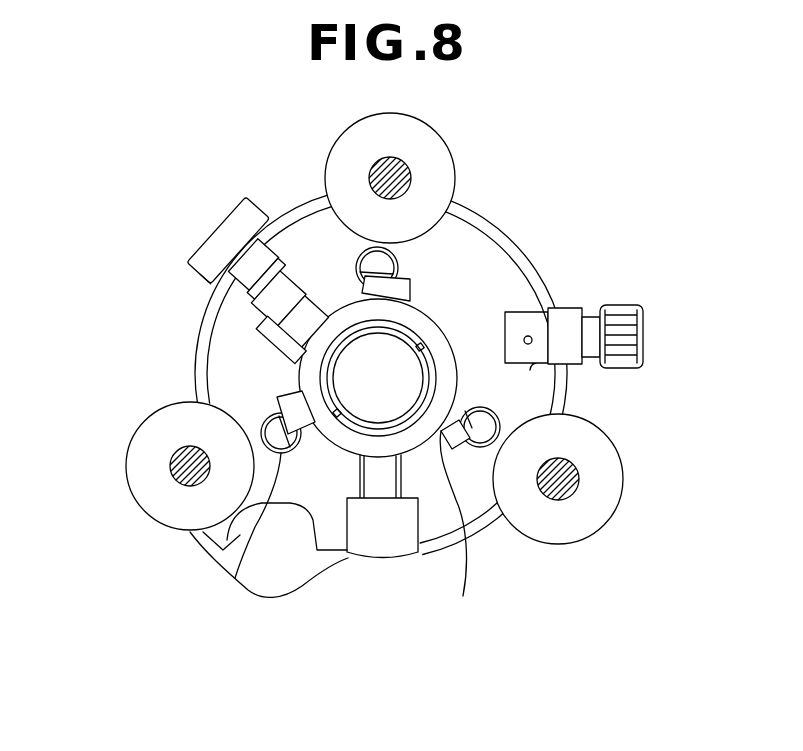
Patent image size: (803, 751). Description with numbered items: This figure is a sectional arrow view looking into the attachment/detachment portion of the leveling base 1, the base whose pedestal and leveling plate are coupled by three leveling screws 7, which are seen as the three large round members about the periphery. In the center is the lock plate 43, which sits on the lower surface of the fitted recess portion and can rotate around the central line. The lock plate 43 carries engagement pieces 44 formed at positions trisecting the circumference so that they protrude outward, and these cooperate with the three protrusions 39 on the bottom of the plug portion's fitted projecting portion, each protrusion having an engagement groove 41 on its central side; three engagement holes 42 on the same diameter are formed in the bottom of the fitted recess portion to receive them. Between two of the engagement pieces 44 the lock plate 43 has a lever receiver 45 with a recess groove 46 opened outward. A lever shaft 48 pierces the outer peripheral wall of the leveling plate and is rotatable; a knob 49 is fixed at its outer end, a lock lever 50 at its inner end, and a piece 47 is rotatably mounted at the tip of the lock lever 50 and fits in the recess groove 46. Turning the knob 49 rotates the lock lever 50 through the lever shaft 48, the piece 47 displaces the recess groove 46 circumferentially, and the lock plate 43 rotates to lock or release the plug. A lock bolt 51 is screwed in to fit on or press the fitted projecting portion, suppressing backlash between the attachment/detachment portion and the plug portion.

The leveling base 1 is at (529, 270).
The leveling screw 7 is at (623, 497).
The protrusion 39 is at (235, 578).
The engagement groove 41 is at (458, 529).
The engagement hole 42 is at (258, 450).
The lock plate 43 is at (440, 302).
The engagement piece 44 is at (410, 287).
The lever receiver 45 is at (302, 322).
The recess groove 46 is at (281, 339).
The piece 47 is at (278, 292).
The lever shaft 48 is at (253, 264).
The knob 49 is at (228, 240).
The lock lever 50 is at (205, 278).
The lock bolt 51 is at (618, 302).